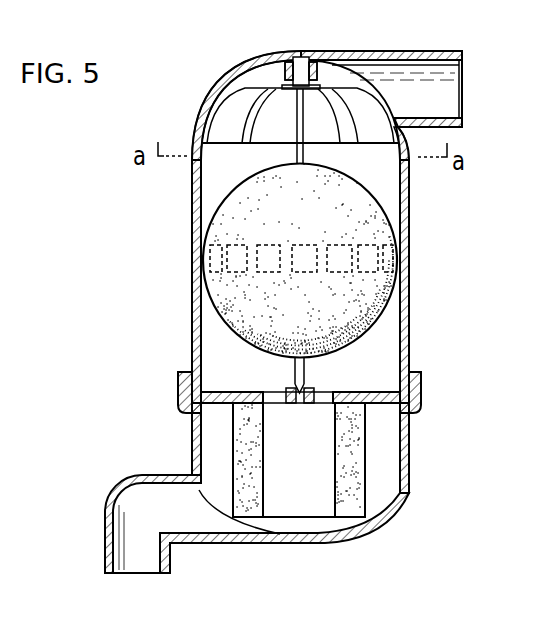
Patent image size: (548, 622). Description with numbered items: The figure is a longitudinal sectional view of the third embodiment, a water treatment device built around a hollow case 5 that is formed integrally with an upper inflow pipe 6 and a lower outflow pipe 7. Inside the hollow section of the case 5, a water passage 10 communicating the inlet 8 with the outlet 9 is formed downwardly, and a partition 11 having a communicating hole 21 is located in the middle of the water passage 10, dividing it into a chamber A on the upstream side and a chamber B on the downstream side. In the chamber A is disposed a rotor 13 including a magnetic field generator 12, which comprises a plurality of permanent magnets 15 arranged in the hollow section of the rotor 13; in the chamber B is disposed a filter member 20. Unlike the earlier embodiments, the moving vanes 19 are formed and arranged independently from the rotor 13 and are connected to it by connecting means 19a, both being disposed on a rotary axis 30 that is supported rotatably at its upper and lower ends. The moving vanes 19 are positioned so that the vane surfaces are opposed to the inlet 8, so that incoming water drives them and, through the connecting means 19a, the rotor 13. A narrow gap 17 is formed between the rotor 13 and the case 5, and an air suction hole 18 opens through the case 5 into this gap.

The case 5 is at (300, 366).
The upper inflow pipe 6 is at (419, 54).
The lower outflow pipe 7 is at (106, 520).
The inlet 8 is at (463, 76).
The outlet 9 is at (125, 575).
The water passage 10 is at (193, 180).
The partition 11 is at (414, 407).
The magnetic field generator 12 is at (243, 308).
The rotor 13 is at (283, 268).
The permanent magnets 15 is at (230, 300).
The narrow gap 17 is at (198, 280).
The air suction hole 18 is at (195, 248).
The moving vanes 19 is at (248, 121).
The connecting means 19a is at (297, 150).
The filter member 20 is at (357, 452).
The communicating hole 21 is at (313, 406).
The rotary axis 30 is at (338, 415).
The chamber on the upstream side A is at (226, 356).
The chamber on the downstream side B is at (278, 453).